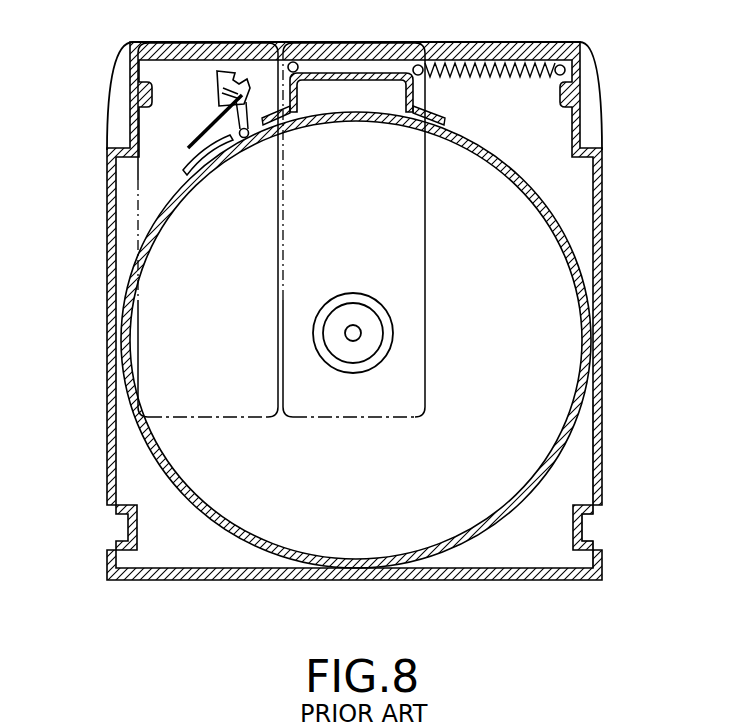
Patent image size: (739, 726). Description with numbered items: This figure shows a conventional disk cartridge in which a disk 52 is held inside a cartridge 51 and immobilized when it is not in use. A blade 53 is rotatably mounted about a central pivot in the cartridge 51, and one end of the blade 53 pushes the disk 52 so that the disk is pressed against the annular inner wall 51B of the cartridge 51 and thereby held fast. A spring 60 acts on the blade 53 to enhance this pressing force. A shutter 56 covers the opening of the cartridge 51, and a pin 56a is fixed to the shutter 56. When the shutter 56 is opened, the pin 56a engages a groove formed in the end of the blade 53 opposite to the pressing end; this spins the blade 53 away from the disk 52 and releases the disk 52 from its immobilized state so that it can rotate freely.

The cartridge 51 is at (603, 205).
The inner wall of cartridge 51B is at (563, 443).
The disk 52 is at (465, 477).
The blade 53 is at (212, 98).
The shutter 56 is at (425, 243).
The pin 56a is at (297, 66).
The spring 60 is at (207, 132).